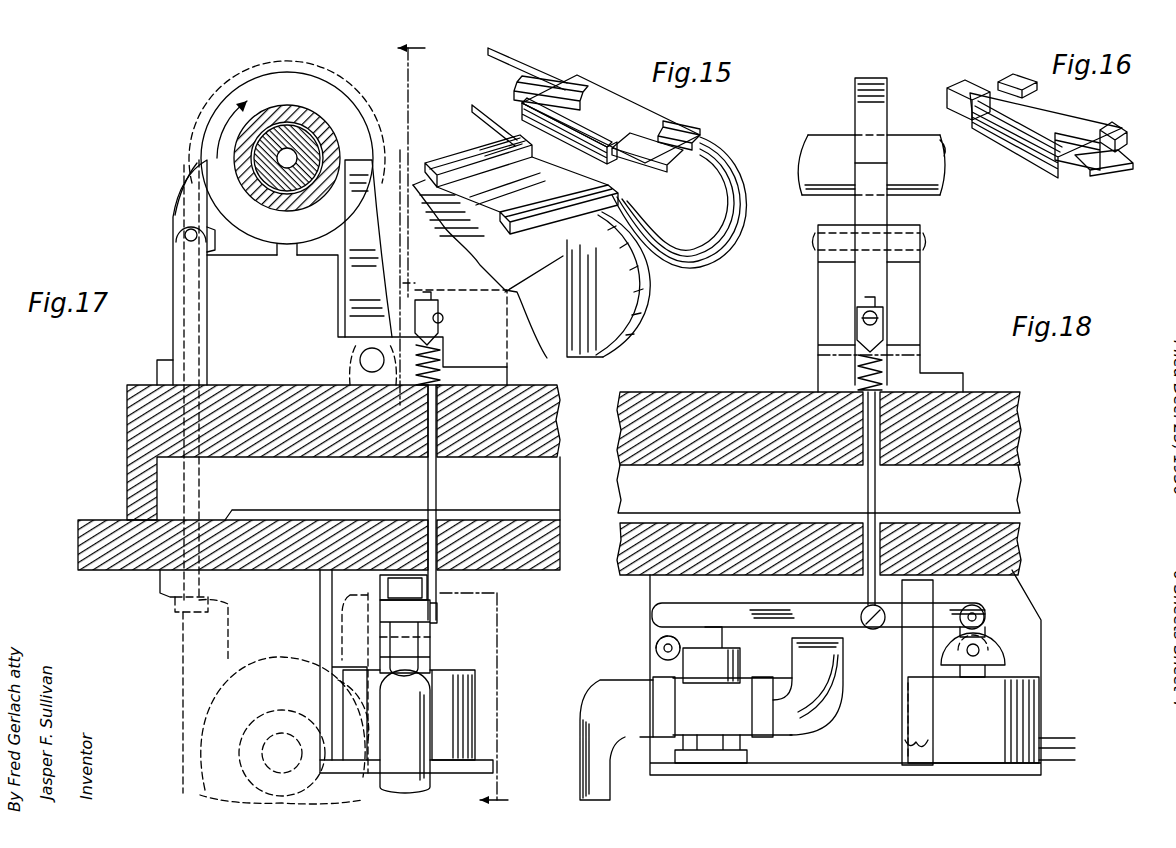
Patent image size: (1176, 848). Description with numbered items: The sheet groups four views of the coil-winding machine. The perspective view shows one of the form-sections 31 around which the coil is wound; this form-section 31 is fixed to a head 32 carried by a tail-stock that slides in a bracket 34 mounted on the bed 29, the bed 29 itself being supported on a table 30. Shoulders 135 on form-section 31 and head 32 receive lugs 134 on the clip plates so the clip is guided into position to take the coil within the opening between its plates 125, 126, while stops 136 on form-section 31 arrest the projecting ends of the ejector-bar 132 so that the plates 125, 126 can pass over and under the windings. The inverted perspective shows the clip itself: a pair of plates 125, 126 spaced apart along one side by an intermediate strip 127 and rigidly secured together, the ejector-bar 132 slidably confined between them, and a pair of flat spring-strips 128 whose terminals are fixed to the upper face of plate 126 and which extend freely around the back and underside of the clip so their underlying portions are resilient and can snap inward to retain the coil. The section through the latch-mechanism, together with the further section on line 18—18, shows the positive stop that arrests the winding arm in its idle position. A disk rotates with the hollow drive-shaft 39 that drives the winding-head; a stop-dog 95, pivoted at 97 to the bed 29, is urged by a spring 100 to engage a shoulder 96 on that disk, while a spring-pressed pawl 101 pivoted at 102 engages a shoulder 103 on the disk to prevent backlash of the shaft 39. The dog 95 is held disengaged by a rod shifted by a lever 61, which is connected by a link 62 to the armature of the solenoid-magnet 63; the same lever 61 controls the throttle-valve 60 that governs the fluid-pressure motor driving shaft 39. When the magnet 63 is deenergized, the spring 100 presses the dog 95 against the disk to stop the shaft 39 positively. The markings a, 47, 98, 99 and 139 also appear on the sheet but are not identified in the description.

In FIG. 15, the strip of material a is at (519, 90).
In FIG. 17, the section line 18— 18 is at (464, 424).
In FIG. 17, the bed 29 is at (558, 420).
In FIG. 18, the bed 29 is at (993, 398).
In FIG. 17, the table 30 is at (202, 527).
In FIG. 18, the table 30 is at (1020, 535).
In FIG. 15, the form-section 31 is at (652, 294).
In FIG. 15, the head 32 is at (582, 352).
In FIG. 15, the bracket 34 is at (548, 358).
In FIG. 17, the hollow drive-shaft 39 is at (275, 184).
In FIG. 18, the hollow drive-shaft 39 is at (908, 142).
In FIG. 17, the hub 47 is at (330, 140).
In FIG. 18, the throttle-valve 60 is at (713, 667).
In FIG. 17, the lever 61 is at (408, 684).
In FIG. 18, the lever 61 is at (810, 612).
In FIG. 18, the link 62 is at (982, 630).
In FIG. 17, the solenoid-magnet 63 is at (409, 715).
In FIG. 18, the solenoid-magnet 63 is at (991, 720).
In FIG. 17, the stop-dog 95 is at (380, 178).
In FIG. 17, the shoulder 96 is at (365, 162).
In FIG. 17, the pivot 97 is at (358, 360).
In FIG. 17, the needle 98 is at (440, 305).
In FIG. 18, the needle 98 is at (884, 313).
In FIG. 17, the cutting wheel strip 99 is at (328, 93).
In FIG. 18, the cutting wheel strip 99 is at (888, 85).
In FIG. 17, the spring 100 is at (443, 372).
In FIG. 18, the spring 100 is at (880, 365).
In FIG. 17, the spring-pressed pawl 101 is at (197, 167).
In FIG. 17, the pivot 102 is at (184, 231).
In FIG. 18, the pivot 102 is at (922, 241).
In FIG. 17, the shoulder 103 is at (235, 135).
In FIG. 18, the shoulder 103 is at (860, 167).
In FIG. 15, the plate 125 is at (565, 127).
In FIG. 16, the plate 125 is at (1037, 165).
In FIG. 15, the plate 126 is at (611, 119).
In FIG. 15, the intermediate strip 127 is at (525, 110).
In FIG. 16, the intermediate strip 127 is at (1007, 140).
In FIG. 16, the flat spring-strips 128 is at (975, 102).
In FIG. 15, the ejector-bar 132 is at (683, 132).
In FIG. 16, the ejector-bar 132 is at (1112, 174).
In FIG. 15, the lugs 134 is at (574, 78).
In FIG. 15, the shoulders 135 is at (475, 160).
In FIG. 15, the stops 136 is at (497, 158).
In FIG. 15, the tab 139 is at (703, 131).
In FIG. 16, the tab 139 is at (1118, 128).